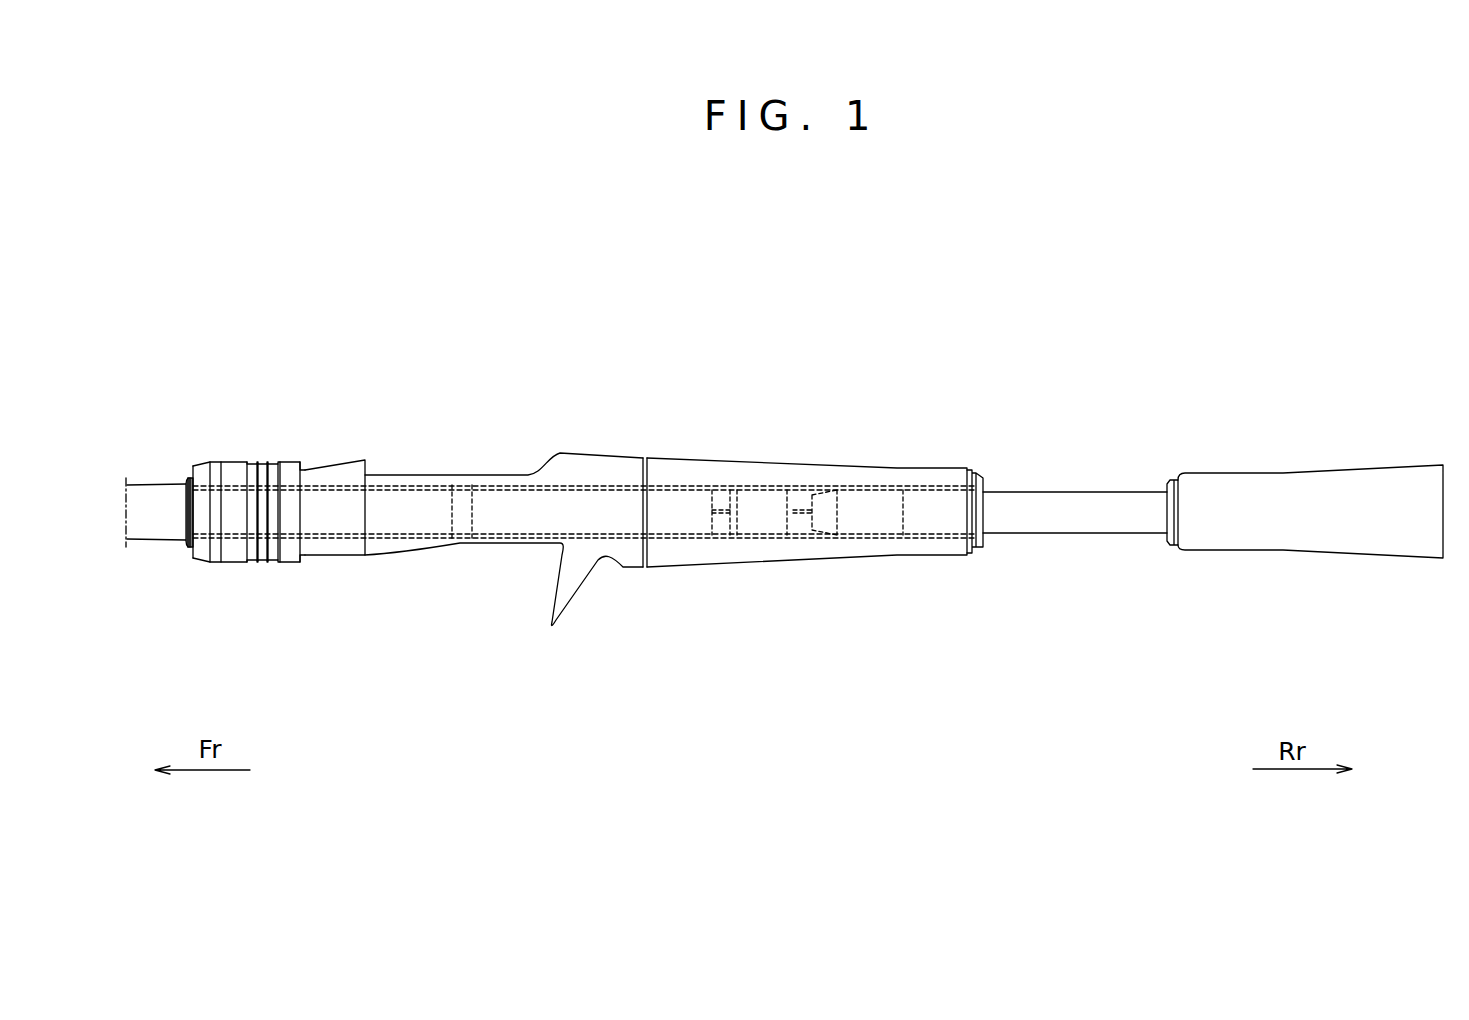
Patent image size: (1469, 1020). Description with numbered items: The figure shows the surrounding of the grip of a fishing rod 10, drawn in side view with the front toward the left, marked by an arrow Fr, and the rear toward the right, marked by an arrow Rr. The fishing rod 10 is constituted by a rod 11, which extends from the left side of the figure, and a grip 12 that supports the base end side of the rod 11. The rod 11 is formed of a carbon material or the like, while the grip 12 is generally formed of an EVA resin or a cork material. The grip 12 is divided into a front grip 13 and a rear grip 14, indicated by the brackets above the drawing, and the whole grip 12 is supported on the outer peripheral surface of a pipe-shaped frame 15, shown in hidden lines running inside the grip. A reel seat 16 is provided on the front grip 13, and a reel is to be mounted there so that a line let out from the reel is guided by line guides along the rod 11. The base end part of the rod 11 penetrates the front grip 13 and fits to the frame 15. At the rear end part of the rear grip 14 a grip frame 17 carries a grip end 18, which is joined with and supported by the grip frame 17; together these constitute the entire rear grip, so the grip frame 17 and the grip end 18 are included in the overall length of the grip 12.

The fishing rod 10 is at (275, 326).
The rod 11 is at (150, 495).
The grip 12 is at (1432, 280).
The front grip 13 is at (189, 345).
The rear grip 14 is at (980, 345).
The pipe-shaped frame 15 is at (480, 487).
The reel seat 16 is at (403, 475).
The grip frame 17 is at (1057, 520).
The grip end 18 is at (1250, 538).